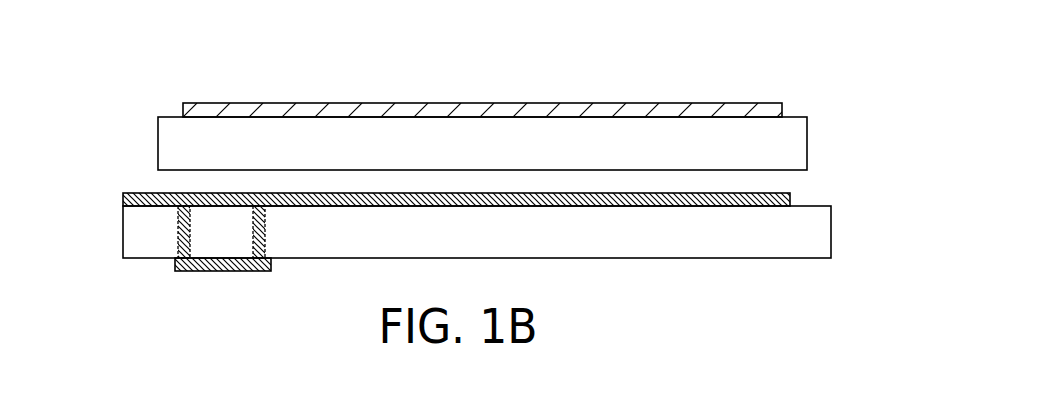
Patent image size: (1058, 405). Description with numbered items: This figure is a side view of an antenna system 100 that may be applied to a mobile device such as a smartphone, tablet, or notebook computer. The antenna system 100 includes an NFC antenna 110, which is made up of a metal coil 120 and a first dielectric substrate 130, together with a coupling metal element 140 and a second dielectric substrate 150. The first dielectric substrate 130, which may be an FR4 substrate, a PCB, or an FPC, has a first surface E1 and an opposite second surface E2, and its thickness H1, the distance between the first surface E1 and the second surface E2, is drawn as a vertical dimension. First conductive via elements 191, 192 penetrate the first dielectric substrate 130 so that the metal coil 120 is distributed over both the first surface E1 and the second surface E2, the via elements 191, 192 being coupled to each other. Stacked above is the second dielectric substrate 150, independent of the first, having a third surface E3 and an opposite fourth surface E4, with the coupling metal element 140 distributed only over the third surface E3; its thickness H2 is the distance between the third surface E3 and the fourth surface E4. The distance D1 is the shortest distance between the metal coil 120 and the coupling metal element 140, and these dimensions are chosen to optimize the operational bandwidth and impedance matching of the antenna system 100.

The antenna system 100 is at (89, 58).
The NFC antenna 110 is at (730, 9).
The metal coil 120 is at (222, 273).
The first dielectric substrate 130 is at (131, 233).
The coupling metal element 140 is at (566, 110).
The second dielectric substrate 150 is at (172, 144).
The first conductive via element 191 is at (178, 232).
The first conductive via element 192 is at (266, 232).
The first surface E1 is at (808, 200).
The second surface E2 is at (811, 261).
The third surface E3 is at (172, 116).
The fourth surface E4 is at (162, 172).
The thickness of the first dielectric substrate H1 is at (325, 207).
The thickness of the second dielectric substrate H2 is at (325, 118).
The distance between the metal coil and the coupling metal element D1 is at (456, 118).